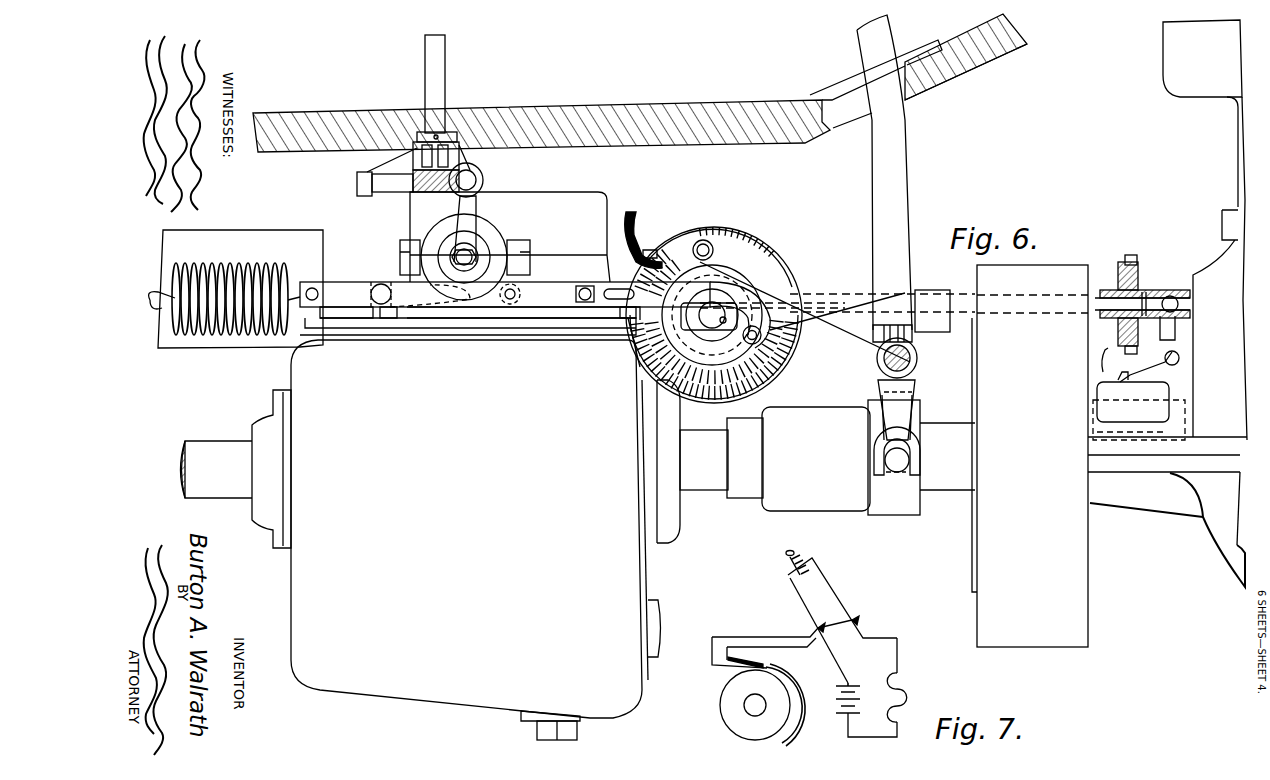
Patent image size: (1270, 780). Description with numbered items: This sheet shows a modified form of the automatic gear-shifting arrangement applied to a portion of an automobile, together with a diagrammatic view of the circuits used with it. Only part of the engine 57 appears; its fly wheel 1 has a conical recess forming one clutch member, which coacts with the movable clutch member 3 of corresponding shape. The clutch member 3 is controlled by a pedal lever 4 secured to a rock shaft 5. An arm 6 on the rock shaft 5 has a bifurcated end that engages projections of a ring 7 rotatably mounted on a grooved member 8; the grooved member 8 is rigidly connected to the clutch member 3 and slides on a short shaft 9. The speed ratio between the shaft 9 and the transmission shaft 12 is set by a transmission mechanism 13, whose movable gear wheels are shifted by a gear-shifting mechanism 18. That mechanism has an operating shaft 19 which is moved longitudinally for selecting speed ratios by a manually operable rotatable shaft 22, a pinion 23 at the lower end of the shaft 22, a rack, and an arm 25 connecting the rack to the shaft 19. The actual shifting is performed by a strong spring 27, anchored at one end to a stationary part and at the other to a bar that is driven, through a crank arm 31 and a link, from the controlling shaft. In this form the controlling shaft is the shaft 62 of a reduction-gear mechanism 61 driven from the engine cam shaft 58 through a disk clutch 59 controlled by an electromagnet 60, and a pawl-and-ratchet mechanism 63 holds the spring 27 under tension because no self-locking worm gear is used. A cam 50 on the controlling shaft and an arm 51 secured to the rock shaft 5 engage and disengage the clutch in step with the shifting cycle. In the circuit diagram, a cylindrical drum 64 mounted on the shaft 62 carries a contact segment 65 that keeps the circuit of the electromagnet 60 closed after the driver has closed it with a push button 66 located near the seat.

In FIG. 6, the fly wheel 1 is at (1085, 630).
In FIG. 6, the clutch member 3 is at (973, 570).
In FIG. 6, the pedal lever 4 is at (904, 186).
In FIG. 6, the rock shaft 5 is at (912, 364).
In FIG. 6, the arm 6 is at (906, 392).
In FIG. 6, the ring 7 is at (900, 512).
In FIG. 6, the grooved member 8 is at (870, 505).
In FIG. 6, the short shaft 9 is at (713, 484).
In FIG. 6, the transmission shaft 12 is at (238, 492).
In FIG. 6, the transmission mechanism 13 is at (308, 598).
In FIG. 6, the gear-shifting mechanism 18 is at (598, 208).
In FIG. 6, the operating shaft 19 is at (470, 262).
In FIG. 6, the manually-operable rotatable shaft 22 is at (440, 92).
In FIG. 6, the pinion 23 is at (420, 194).
In FIG. 6, the arm 25 is at (470, 222).
In FIG. 6, the spring 27 is at (246, 262).
In FIG. 6, the crank arm 31 is at (744, 362).
In FIG. 6, the cam 50 is at (690, 242).
In FIG. 6, the arm 51 is at (805, 290).
In FIG. 6, the engine 57 is at (1206, 88).
In FIG. 6, the cam shaft 58 is at (1188, 305).
In FIG. 6, the disk clutch 59 is at (1128, 262).
In FIG. 6, the electromagnet 60 is at (1158, 392).
In FIG. 7, the electromagnet 60 is at (891, 709).
In FIG. 6, the reduction-gear mechanism 61 is at (790, 340).
In FIG. 6, the shaft 62 is at (710, 330).
In FIG. 6, the pawl-and-ratchet mechanism 63 is at (630, 340).
In FIG. 7, the cylindrical drum 64 is at (728, 708).
In FIG. 7, the contact segment 65 is at (796, 697).
In FIG. 7, the push button 66 is at (795, 570).